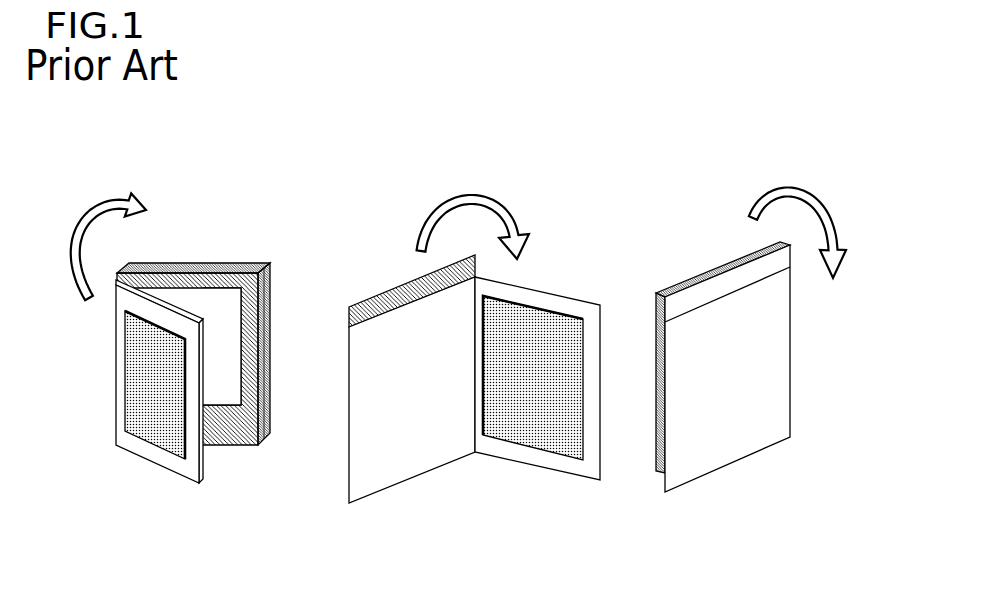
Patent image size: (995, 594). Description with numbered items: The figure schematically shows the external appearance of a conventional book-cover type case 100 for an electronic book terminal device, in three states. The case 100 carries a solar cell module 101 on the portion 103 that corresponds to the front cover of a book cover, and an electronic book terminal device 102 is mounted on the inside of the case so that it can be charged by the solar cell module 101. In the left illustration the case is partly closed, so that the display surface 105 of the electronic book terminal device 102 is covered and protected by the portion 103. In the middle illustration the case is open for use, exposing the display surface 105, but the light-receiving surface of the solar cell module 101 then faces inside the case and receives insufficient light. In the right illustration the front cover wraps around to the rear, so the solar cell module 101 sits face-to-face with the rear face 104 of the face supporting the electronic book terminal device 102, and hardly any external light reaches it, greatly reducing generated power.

The case 100 is at (474, 329).
The solar cell module 101 is at (138, 378).
The electronic book terminal device 102 is at (200, 288).
The portion corresponding to the front cover 103 is at (197, 483).
The rear face 104 is at (415, 450).
The display surface 105 is at (225, 350).